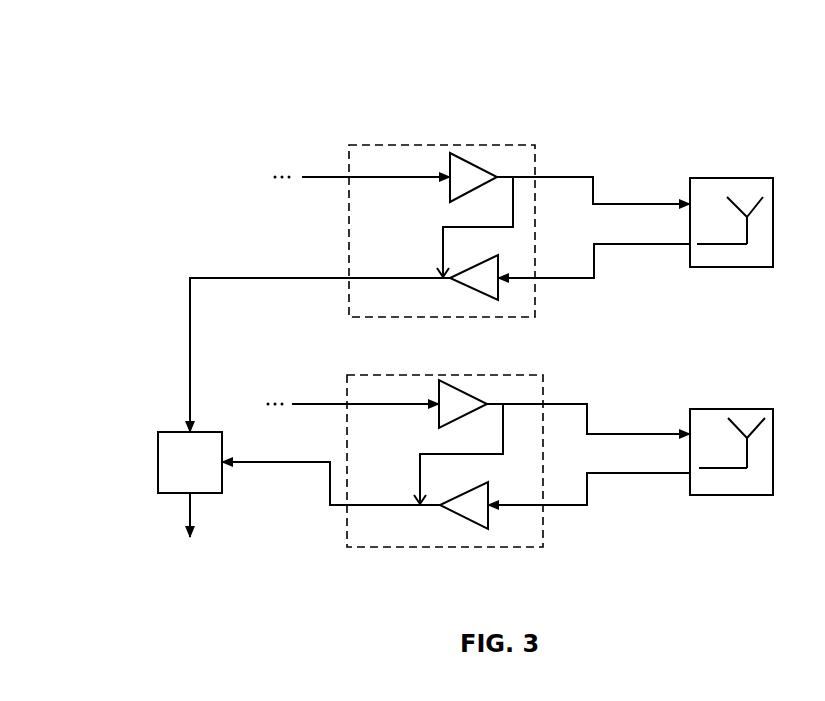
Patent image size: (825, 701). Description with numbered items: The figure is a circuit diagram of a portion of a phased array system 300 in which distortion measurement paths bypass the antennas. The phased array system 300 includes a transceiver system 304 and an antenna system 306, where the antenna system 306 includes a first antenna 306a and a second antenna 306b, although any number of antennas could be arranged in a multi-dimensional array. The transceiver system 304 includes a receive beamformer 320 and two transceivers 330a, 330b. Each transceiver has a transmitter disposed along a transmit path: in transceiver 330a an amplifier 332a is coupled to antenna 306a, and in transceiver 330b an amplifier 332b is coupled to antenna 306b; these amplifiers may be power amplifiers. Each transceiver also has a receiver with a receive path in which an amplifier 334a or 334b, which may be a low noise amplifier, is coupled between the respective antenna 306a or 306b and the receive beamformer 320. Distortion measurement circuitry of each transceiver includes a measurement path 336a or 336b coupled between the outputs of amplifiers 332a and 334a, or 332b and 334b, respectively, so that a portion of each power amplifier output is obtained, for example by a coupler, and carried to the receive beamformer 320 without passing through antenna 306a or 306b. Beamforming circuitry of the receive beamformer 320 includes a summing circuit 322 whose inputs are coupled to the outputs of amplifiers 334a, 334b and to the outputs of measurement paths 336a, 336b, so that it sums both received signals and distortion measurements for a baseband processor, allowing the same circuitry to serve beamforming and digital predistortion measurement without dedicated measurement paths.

The phased array system 300 is at (162, 58).
The transceiver system 304 is at (235, 120).
The antenna system 306 is at (690, 113).
The first antenna 306a is at (745, 178).
The second antenna 306b is at (750, 495).
The receive beamformer 320 is at (107, 363).
The summing circuit 322 is at (168, 430).
The transceiver 330a is at (445, 143).
The transceiver 330b is at (345, 522).
The amplifier 332a is at (487, 167).
The amplifier 332b is at (478, 400).
The amplifier 334a is at (487, 255).
The amplifier 334b is at (483, 482).
The measurement path 336a is at (443, 227).
The measurement path 336b is at (433, 454).